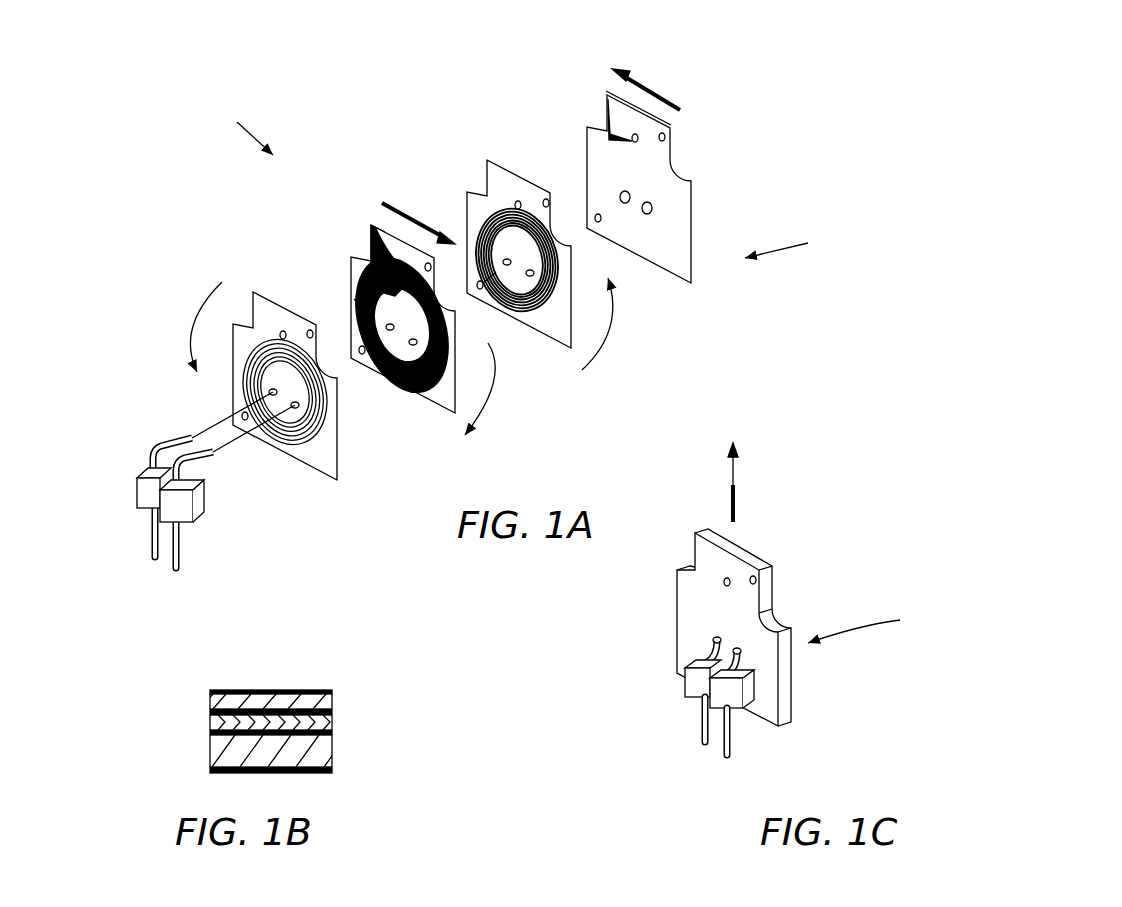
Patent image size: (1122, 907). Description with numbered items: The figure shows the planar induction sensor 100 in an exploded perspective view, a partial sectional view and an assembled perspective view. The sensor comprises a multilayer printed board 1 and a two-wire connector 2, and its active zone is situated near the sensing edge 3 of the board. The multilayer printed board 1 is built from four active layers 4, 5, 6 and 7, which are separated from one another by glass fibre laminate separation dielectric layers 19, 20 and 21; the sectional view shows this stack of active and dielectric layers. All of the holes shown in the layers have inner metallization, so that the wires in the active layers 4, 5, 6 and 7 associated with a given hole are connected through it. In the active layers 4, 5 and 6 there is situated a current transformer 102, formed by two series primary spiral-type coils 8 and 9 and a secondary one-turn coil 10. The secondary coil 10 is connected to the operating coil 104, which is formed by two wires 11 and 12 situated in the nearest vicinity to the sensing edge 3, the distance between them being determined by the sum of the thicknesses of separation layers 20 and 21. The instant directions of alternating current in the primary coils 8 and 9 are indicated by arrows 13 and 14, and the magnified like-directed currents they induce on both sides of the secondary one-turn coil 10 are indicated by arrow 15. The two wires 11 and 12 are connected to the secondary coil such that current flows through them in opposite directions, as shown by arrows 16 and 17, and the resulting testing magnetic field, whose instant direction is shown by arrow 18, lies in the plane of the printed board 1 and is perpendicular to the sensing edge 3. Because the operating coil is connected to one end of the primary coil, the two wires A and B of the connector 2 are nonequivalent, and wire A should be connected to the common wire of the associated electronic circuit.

In FIG. 1C, the multilayer printed board 1 is at (692, 620).
In FIG. 1C, the two-wire connector 2 is at (688, 683).
In FIG. 1C, the edge 3 is at (757, 558).
In FIG. 1A, the active layer 4 is at (297, 457).
In FIG. 1B, the active layer 4 is at (210, 688).
In FIG. 1A, the active layer 5 is at (428, 402).
In FIG. 1B, the active layer 5 is at (210, 708).
In FIG. 1A, the active layer 6 is at (558, 345).
In FIG. 1B, the active layer 6 is at (208, 737).
In FIG. 1A, the active layer 7 is at (673, 277).
In FIG. 1B, the active layer 7 is at (208, 773).
In FIG. 1A, the primary spiral-type coil 8 is at (243, 347).
In FIG. 1A, the primary spiral-type coil 9 is at (493, 205).
In FIG. 1A, the secondary one-turn coil 10 is at (353, 275).
In FIG. 1A, the wire 11 is at (380, 226).
In FIG. 1A, the wire 12 is at (620, 100).
In FIG. 1A, the arrow 13 is at (188, 337).
In FIG. 1A, the arrow 14 is at (613, 342).
In FIG. 1A, the arrow 15 is at (493, 412).
In FIG. 1A, the arrow 16 is at (403, 208).
In FIG. 1A, the arrow 17 is at (643, 80).
In FIG. 1C, the arrow 18 is at (738, 480).
In FIG. 1B, the separation dielectric layer 19 is at (337, 695).
In FIG. 1B, the separation dielectric layer 20 is at (337, 727).
In FIG. 1B, the separation dielectric layer 21 is at (338, 752).
In FIG. 1A, the planar induction sensor 100 is at (799, 244).
In FIG. 1C, the planar induction sensor 100 is at (881, 628).
In FIG. 1A, the current transformer 102 is at (233, 129).
In FIG. 1A, the operating coil 104 is at (353, 300).
In FIG. 1A, the wire A is at (148, 553).
In FIG. 1C, the wire A is at (695, 733).
In FIG. 1A, the wire B is at (188, 558).
In FIG. 1C, the wire B is at (735, 743).